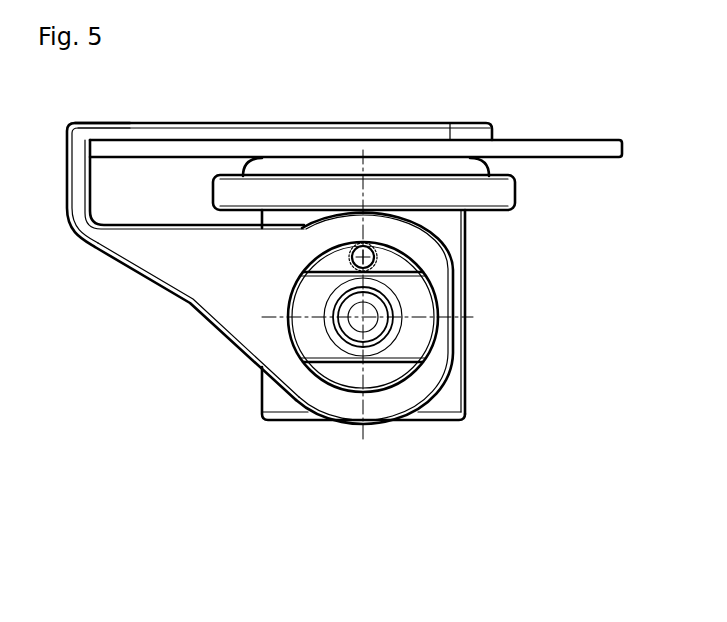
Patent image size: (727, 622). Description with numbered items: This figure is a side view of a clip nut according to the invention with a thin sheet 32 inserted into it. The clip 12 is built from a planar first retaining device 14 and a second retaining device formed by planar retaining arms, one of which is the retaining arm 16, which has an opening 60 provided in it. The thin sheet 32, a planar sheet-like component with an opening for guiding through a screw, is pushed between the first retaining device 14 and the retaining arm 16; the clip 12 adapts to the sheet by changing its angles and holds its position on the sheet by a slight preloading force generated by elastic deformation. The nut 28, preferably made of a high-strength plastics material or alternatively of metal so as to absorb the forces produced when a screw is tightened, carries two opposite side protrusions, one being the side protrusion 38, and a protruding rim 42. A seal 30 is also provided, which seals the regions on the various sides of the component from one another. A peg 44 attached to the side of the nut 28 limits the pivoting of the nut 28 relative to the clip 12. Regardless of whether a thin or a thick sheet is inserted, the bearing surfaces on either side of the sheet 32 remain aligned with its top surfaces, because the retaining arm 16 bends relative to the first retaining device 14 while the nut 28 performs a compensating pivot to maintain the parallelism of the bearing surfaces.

The clip 12 is at (143, 274).
The first retaining device 14 is at (252, 122).
The retaining arm 16 is at (195, 307).
The nut 28 is at (258, 400).
The seal 30 is at (375, 168).
The thin sheet 32 is at (527, 140).
The side protrusion 38 is at (415, 342).
The protruding rim 42 is at (515, 197).
The peg 44 is at (377, 262).
The opening 60 is at (345, 378).